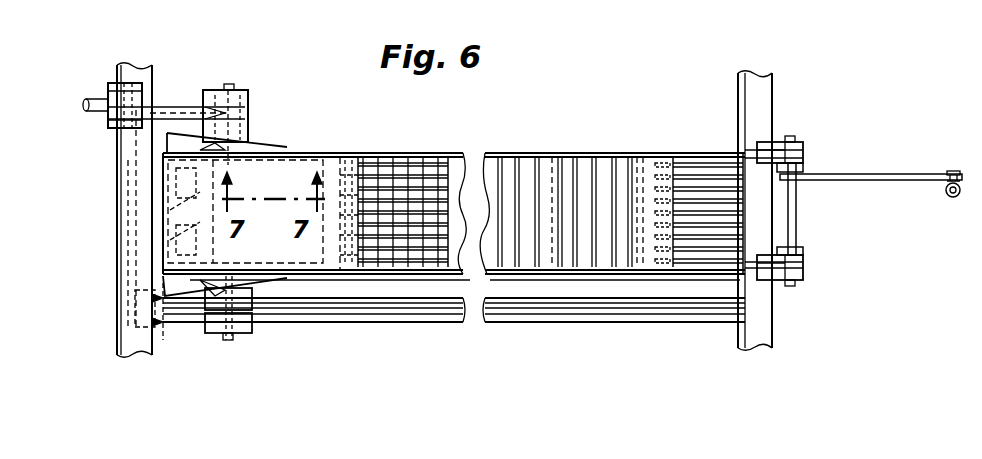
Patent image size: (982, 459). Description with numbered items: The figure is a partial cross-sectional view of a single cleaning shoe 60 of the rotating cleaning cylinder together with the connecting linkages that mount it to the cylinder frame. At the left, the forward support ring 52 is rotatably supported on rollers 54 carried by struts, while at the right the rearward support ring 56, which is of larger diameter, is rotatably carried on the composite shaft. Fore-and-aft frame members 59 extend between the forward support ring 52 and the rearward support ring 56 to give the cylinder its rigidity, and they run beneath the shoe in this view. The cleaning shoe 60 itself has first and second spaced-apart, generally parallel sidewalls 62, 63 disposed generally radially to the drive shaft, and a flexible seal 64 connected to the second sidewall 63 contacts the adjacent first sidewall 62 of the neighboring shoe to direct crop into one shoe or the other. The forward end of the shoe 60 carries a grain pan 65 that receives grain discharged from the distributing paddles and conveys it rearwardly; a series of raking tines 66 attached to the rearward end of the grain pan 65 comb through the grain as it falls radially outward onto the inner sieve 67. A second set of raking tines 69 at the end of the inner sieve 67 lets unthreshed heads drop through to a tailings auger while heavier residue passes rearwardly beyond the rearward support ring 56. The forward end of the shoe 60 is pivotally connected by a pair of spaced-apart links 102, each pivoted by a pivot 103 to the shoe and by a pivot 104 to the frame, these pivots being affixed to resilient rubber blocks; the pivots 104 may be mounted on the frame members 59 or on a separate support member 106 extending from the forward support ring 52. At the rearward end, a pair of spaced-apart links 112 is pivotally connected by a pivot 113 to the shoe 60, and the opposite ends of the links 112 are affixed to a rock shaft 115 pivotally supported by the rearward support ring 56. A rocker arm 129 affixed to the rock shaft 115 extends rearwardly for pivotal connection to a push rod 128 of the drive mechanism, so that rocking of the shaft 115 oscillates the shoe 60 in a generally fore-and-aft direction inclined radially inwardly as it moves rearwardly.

The forward support ring 52 is at (117, 255).
The rollers 54 is at (108, 90).
The rearward support ring 56 is at (762, 96).
The fore-and-aft frame members 59 is at (415, 324).
The cleaning shoe 60 is at (607, 84).
The first sidewall 62 is at (443, 152).
The second sidewall 63 is at (548, 275).
The flexible seal 64 is at (603, 275).
The grain pan 65 is at (287, 180).
The raking tines 66 is at (376, 160).
The inner sieve 67 is at (508, 185).
The second set of raking tines 69 is at (690, 178).
The links 102 is at (205, 157).
The pivot 103 is at (176, 212).
The pivot 104 is at (231, 88).
The support member 106 is at (178, 108).
The links 112 is at (803, 168).
The pivot 113 is at (770, 142).
The rock shaft 115 is at (796, 212).
The push rod 128 is at (955, 200).
The rocker arm 129 is at (898, 173).